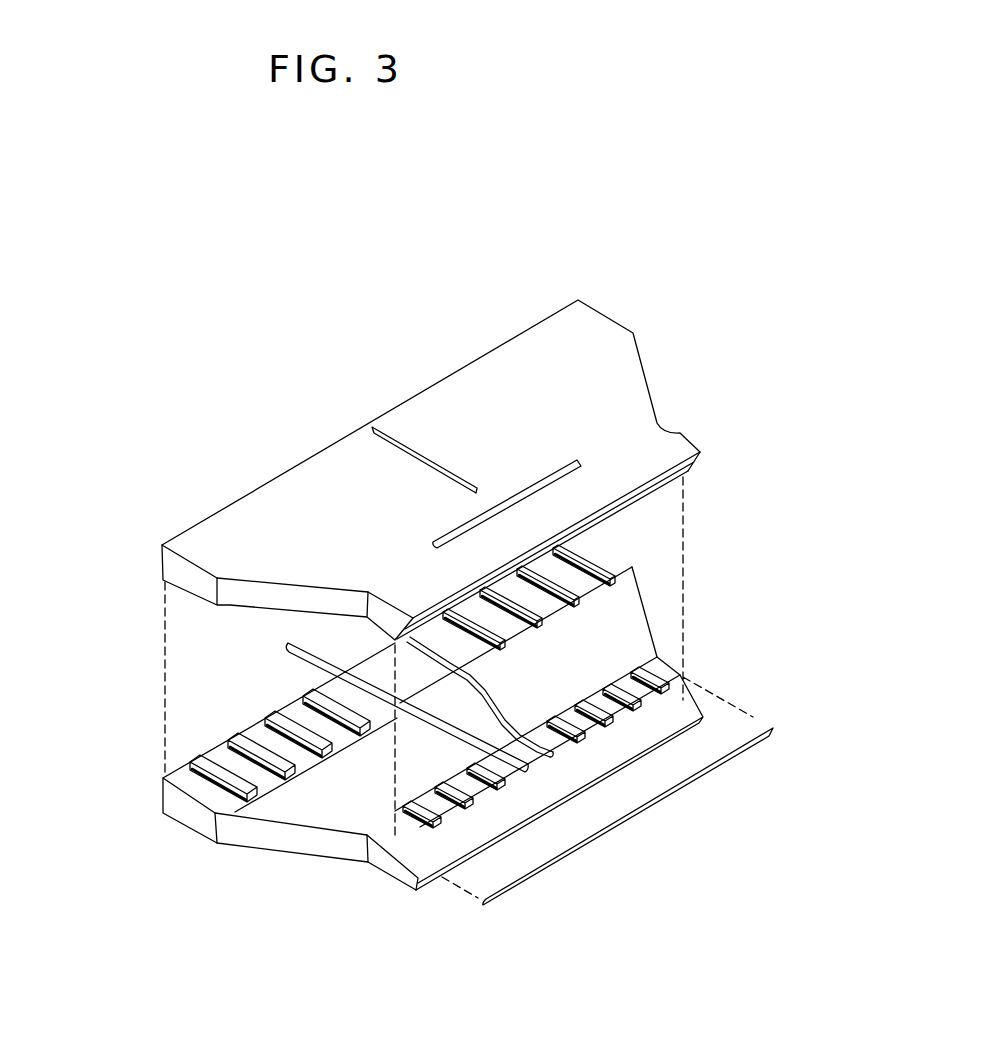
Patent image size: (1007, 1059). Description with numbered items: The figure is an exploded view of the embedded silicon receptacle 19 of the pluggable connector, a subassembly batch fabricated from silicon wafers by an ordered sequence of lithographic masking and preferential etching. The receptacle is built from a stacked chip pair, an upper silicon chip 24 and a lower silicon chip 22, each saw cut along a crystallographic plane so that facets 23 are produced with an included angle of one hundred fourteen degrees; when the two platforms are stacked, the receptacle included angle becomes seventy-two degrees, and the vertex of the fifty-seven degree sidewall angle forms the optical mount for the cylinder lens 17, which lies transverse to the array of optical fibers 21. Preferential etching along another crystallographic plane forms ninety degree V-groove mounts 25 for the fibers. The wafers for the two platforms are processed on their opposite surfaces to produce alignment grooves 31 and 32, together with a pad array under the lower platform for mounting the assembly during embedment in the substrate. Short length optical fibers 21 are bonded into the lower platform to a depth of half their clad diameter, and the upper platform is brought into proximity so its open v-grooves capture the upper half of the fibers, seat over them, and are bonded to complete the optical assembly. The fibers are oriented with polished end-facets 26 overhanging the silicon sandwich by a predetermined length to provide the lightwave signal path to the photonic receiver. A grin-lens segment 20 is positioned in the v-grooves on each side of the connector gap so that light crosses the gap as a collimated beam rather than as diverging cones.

The cylinder lens 17 is at (735, 750).
The embedded silicon receptacle 19 is at (718, 388).
The grin-lens segment 20 is at (395, 641).
The optical fibers 21 is at (398, 630).
The lower silicon chip 22 is at (647, 614).
The facets 23 is at (663, 482).
The upper silicon chip 24 is at (680, 433).
The V-groove mounts 25 is at (633, 570).
The polished end-facets 26 is at (288, 646).
The alignment groove 31 is at (417, 450).
The alignment groove 32 is at (578, 462).